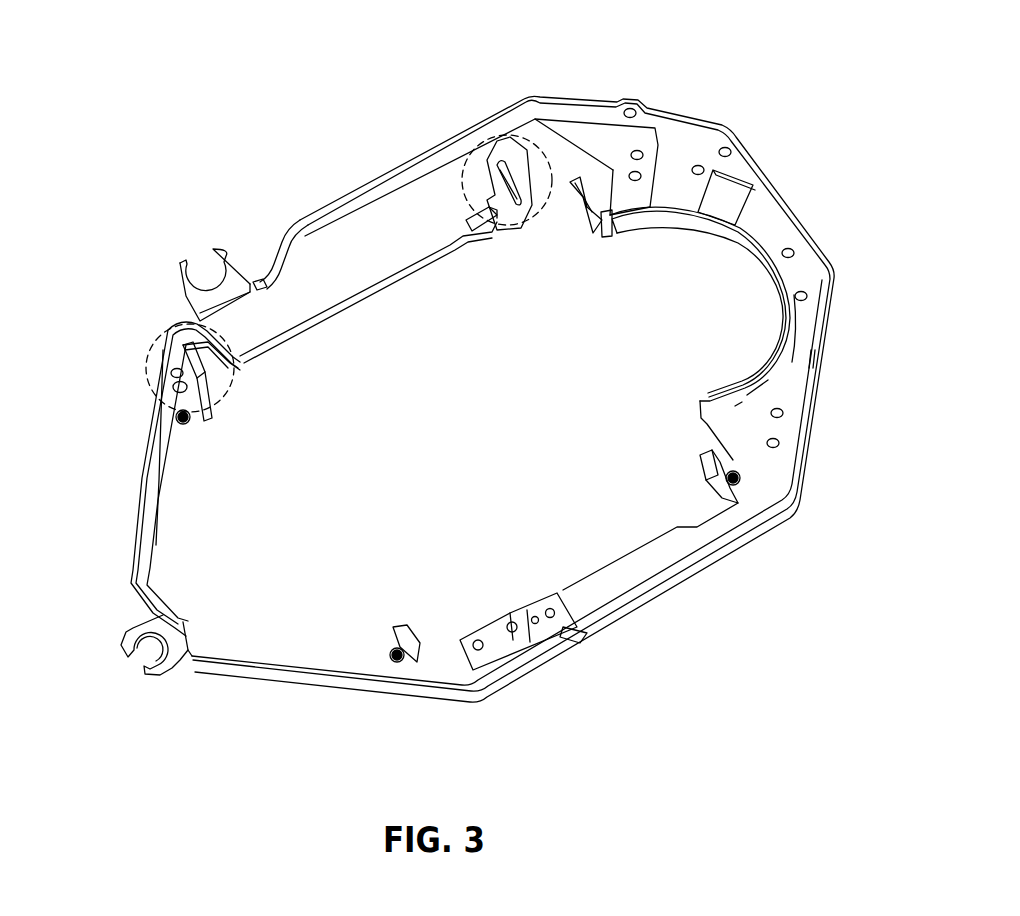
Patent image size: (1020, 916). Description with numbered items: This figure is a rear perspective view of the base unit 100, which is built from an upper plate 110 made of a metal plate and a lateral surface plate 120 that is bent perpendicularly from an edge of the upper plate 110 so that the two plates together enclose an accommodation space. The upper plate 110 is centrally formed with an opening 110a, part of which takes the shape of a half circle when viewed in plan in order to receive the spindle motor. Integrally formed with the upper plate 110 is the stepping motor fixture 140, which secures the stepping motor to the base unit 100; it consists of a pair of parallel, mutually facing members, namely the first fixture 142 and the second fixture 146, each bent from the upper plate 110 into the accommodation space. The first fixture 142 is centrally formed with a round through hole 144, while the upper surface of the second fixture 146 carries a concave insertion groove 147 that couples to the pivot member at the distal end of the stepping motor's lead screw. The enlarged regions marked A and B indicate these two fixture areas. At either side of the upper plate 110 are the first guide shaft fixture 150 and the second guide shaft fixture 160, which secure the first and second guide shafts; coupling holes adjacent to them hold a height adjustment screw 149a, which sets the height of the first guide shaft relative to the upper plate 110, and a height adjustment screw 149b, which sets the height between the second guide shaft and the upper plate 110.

The base unit 100 is at (397, 160).
The upper plate 110 is at (310, 283).
The opening 110a is at (470, 447).
The lateral surface plate 120 is at (345, 205).
The stepping motor fixture 140 is at (513, 167).
The first fixture 142 is at (530, 217).
The round through hole 144 is at (493, 227).
The second fixture 146 is at (207, 380).
The insertion groove 147 is at (167, 367).
The height adjustment screw 149a is at (172, 414).
The height adjustment screw 149b is at (398, 660).
The first guide shaft fixture 150 is at (600, 190).
The second guide shaft fixture 160 is at (700, 490).
The detail region A is at (470, 157).
The detail region B is at (163, 328).